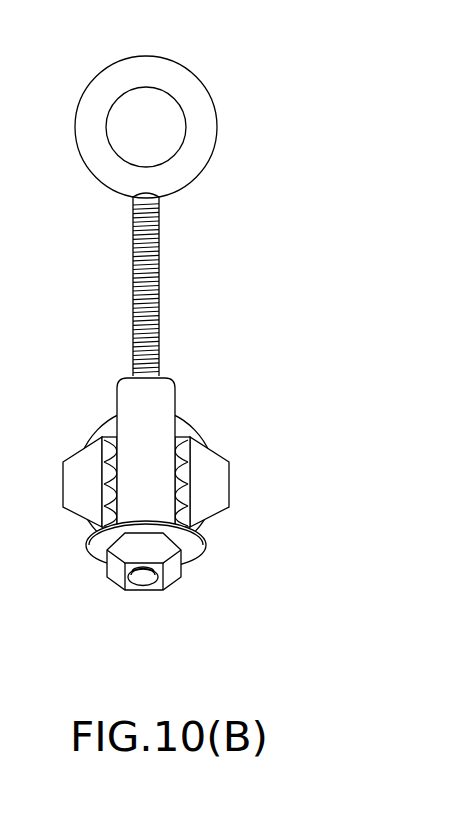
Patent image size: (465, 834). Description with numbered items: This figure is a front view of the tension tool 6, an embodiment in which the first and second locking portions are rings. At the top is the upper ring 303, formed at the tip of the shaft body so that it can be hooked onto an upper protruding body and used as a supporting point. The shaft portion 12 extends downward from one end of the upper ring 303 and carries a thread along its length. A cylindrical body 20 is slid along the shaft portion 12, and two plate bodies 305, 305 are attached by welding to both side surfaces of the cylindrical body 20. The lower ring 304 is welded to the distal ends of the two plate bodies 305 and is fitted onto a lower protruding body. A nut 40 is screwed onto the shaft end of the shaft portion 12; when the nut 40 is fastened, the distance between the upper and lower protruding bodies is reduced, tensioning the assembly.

The tension tool 6 is at (155, 339).
The shaft portion 12 is at (132, 300).
The cylindrical body 20 is at (132, 420).
The nut 40 is at (167, 575).
The upper ring 303 is at (198, 125).
The lower ring 304 is at (186, 431).
The plate bodies 305 is at (80, 495).